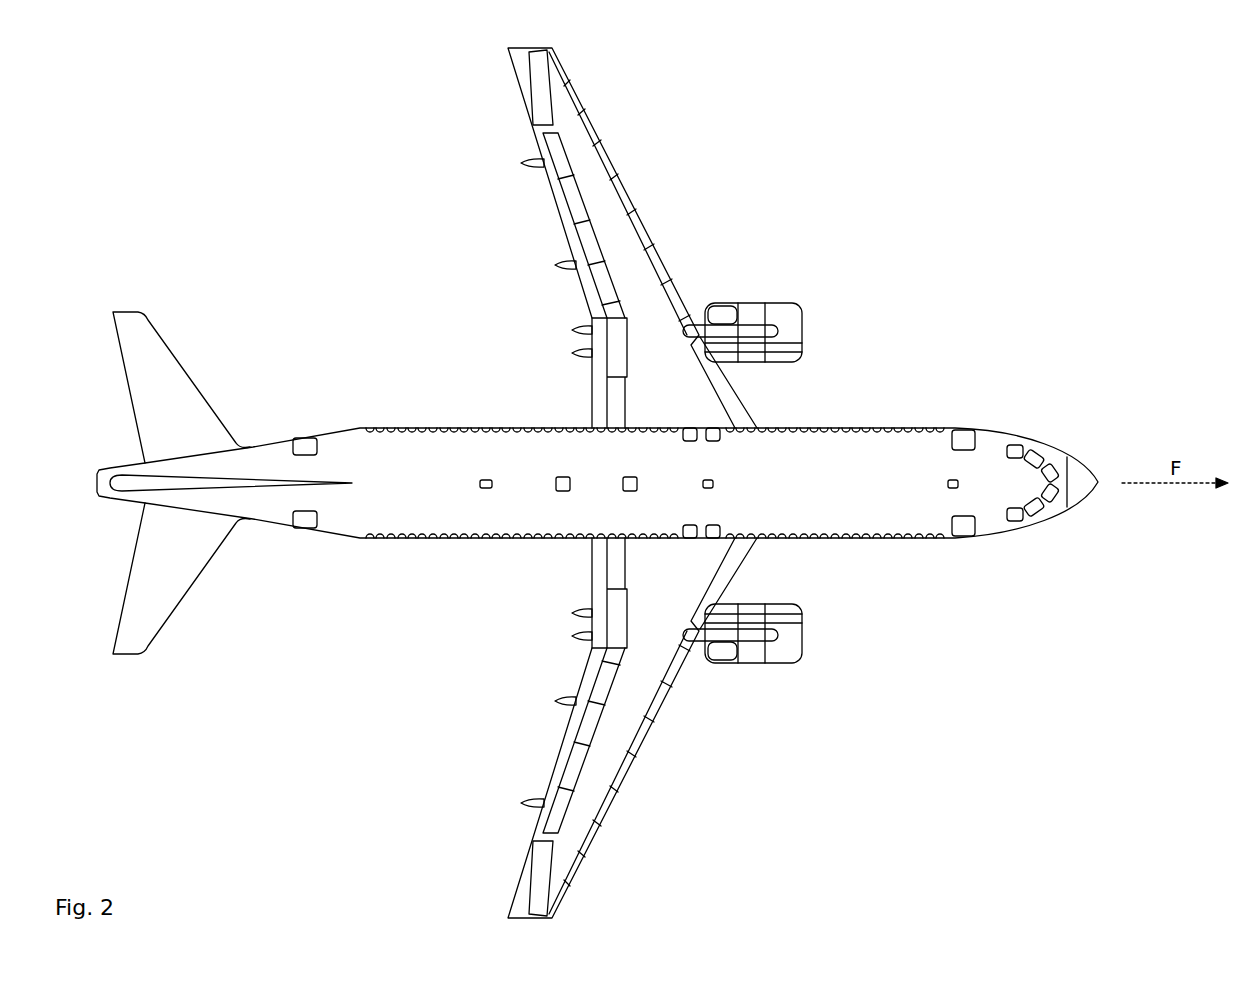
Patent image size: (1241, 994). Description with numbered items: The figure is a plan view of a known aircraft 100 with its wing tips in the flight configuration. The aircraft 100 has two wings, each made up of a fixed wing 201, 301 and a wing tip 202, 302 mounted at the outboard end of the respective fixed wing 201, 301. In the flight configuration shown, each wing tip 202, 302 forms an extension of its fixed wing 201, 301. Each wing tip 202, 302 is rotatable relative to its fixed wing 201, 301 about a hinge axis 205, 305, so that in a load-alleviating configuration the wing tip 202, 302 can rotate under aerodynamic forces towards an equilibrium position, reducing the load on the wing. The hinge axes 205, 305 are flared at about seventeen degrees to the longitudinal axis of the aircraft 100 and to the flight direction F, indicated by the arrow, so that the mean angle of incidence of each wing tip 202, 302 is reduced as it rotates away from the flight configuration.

The aircraft 100 is at (597, 488).
The fixed wing 201 is at (652, 238).
The wing tip 202 is at (552, 105).
The hinge axis 205 is at (562, 163).
The fixed wing 301 is at (670, 733).
The wing tip 302 is at (548, 878).
The hinge axis 305 is at (562, 804).